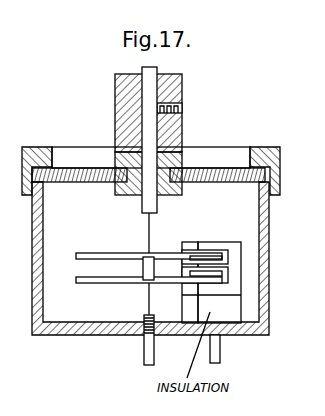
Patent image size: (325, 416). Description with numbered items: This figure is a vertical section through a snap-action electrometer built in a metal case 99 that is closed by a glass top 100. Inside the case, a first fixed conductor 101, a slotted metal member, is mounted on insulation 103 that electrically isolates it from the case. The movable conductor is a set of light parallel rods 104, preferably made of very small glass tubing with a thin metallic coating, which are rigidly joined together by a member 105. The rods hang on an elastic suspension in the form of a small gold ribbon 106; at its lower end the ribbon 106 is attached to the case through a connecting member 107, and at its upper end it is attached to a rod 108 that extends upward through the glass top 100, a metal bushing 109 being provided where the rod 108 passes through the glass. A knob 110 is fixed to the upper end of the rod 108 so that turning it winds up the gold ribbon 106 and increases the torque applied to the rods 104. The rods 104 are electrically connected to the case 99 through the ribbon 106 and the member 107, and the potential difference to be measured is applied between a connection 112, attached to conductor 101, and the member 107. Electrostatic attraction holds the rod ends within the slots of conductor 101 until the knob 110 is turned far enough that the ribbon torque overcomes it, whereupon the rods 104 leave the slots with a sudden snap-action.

The metal case 99 is at (268, 242).
The glass top 100 is at (235, 165).
The first fixed conductor 101 is at (241, 240).
The insulation 103 is at (233, 311).
The rods 104 is at (82, 281).
The member 105 is at (143, 266).
The gold ribbon 106 is at (152, 228).
The connecting member 107 is at (144, 355).
The rod 108 is at (152, 133).
The metal bushing 109 is at (125, 160).
The knob 110 is at (182, 84).
The connection 112 is at (220, 350).